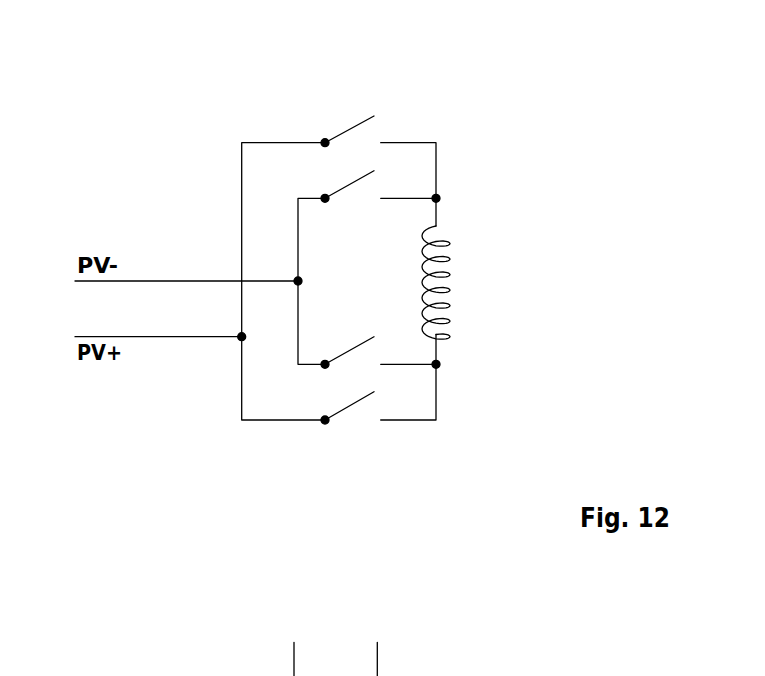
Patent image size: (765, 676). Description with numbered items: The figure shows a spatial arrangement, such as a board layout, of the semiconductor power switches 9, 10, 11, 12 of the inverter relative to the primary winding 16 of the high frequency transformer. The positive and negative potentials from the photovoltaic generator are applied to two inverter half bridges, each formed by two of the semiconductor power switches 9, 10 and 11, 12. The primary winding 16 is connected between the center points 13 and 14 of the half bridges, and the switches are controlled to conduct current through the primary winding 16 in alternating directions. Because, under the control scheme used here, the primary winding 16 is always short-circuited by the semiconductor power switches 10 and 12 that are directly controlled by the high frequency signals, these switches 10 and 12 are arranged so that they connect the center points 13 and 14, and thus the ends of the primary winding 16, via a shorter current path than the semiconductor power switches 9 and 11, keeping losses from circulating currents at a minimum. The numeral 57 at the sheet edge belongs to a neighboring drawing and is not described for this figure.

The semiconductor power switch 9 is at (354, 123).
The semiconductor power switch 10 is at (353, 179).
The semiconductor power switch 11 is at (357, 403).
The semiconductor power switch 12 is at (353, 349).
The center point 13 is at (436, 198).
The center point 14 is at (436, 364).
The primary winding 16 is at (465, 275).
The component of adjacent figure (partially shown) 57 is at (445, 668).